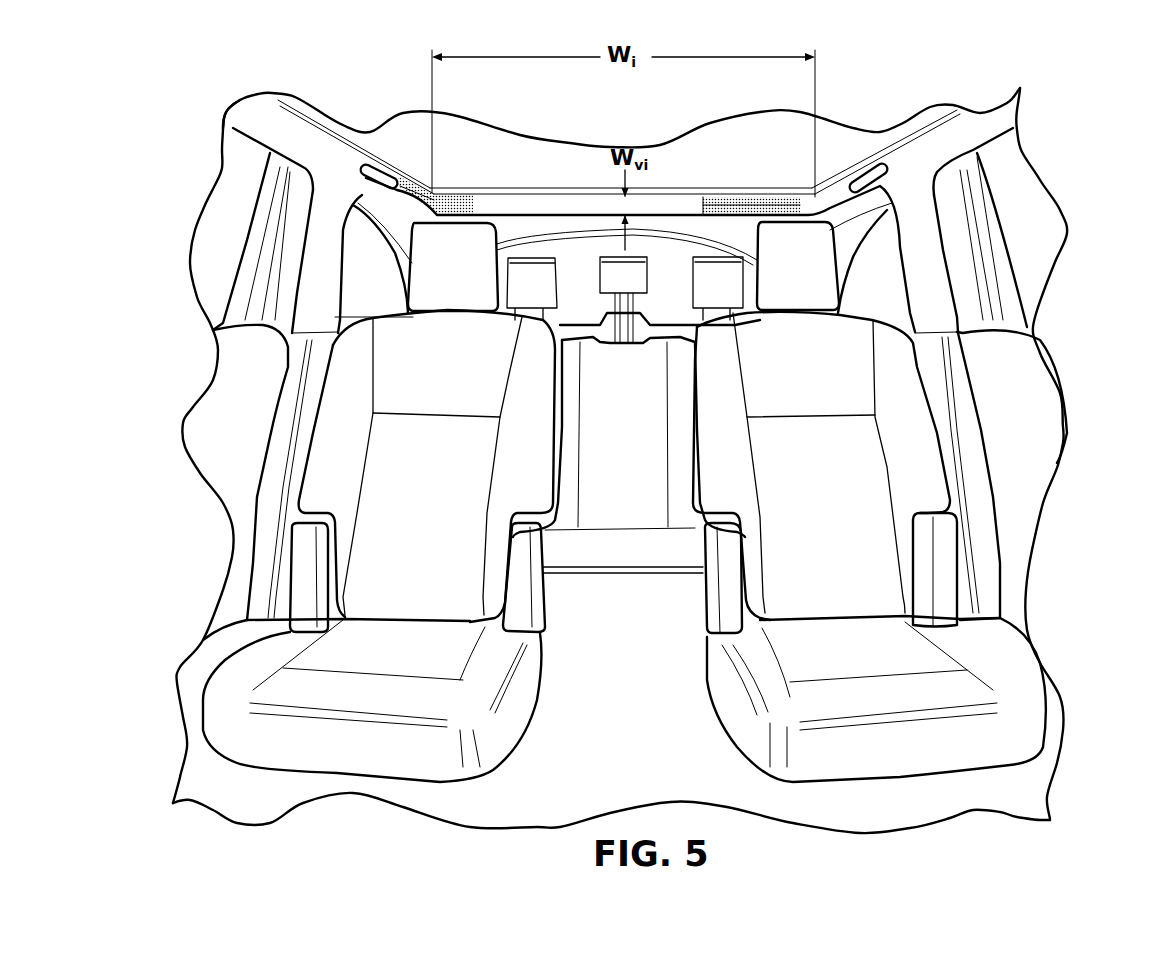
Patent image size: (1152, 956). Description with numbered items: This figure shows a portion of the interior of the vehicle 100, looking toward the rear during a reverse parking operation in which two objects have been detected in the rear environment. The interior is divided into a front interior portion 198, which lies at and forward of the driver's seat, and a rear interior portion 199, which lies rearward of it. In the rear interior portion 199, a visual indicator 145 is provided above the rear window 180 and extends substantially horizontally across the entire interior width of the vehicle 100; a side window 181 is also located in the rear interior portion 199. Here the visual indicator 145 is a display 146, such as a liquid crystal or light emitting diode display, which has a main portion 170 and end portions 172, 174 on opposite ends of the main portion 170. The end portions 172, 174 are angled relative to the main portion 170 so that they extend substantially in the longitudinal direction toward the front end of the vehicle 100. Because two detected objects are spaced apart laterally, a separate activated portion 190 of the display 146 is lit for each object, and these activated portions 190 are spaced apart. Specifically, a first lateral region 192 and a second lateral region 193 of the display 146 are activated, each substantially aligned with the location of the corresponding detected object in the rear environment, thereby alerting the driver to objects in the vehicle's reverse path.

The vehicle 100 is at (997, 126).
The visual indicator 145 is at (707, 193).
The display 146 is at (653, 207).
The main portion 170 is at (543, 197).
The end portion 172 is at (853, 187).
The end portion 174 is at (393, 187).
The rear window 180 is at (682, 270).
The side window 181 is at (355, 253).
The activated portion 190 is at (465, 203).
The first lateral region 192 is at (743, 187).
The second lateral region 193 is at (443, 188).
The front interior portion 198 is at (900, 418).
The rear interior portion 199 is at (580, 303).